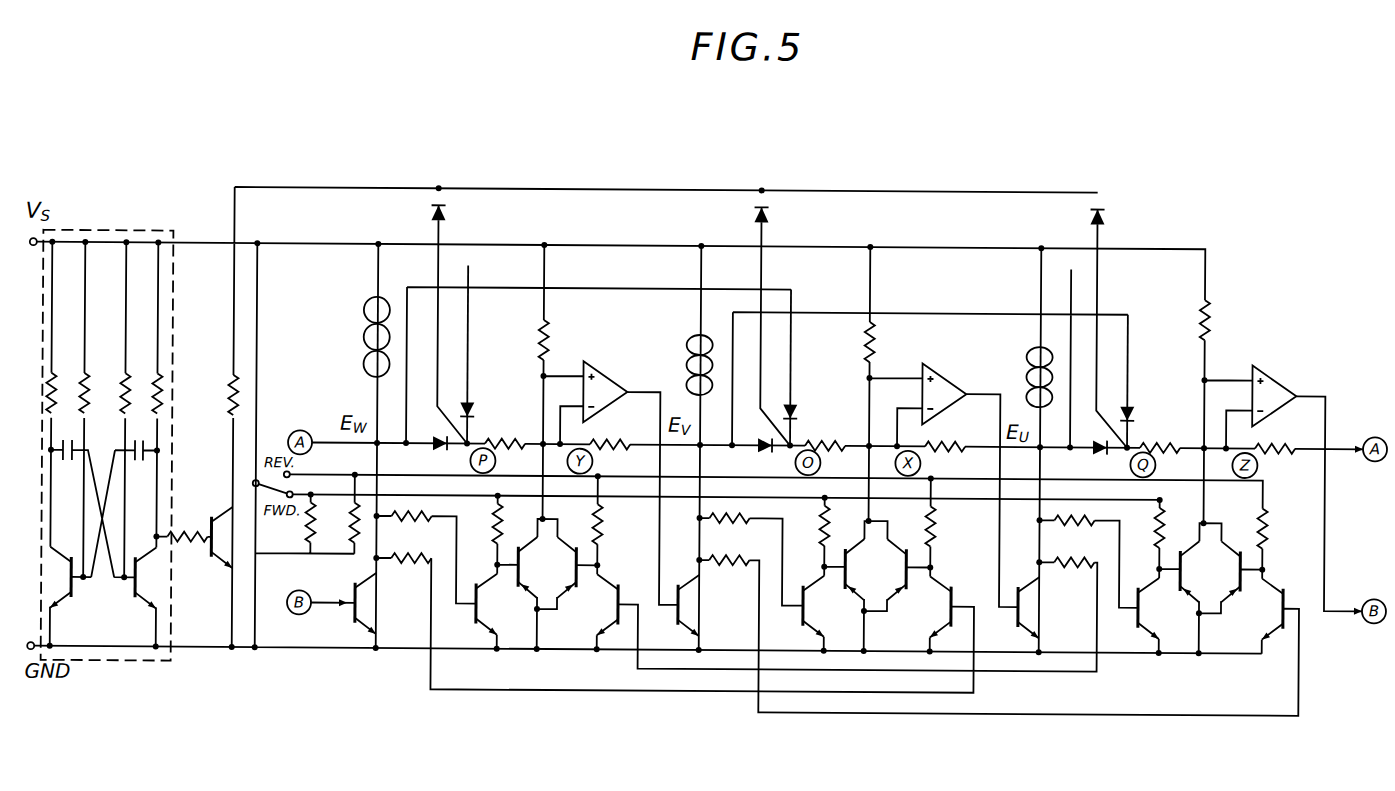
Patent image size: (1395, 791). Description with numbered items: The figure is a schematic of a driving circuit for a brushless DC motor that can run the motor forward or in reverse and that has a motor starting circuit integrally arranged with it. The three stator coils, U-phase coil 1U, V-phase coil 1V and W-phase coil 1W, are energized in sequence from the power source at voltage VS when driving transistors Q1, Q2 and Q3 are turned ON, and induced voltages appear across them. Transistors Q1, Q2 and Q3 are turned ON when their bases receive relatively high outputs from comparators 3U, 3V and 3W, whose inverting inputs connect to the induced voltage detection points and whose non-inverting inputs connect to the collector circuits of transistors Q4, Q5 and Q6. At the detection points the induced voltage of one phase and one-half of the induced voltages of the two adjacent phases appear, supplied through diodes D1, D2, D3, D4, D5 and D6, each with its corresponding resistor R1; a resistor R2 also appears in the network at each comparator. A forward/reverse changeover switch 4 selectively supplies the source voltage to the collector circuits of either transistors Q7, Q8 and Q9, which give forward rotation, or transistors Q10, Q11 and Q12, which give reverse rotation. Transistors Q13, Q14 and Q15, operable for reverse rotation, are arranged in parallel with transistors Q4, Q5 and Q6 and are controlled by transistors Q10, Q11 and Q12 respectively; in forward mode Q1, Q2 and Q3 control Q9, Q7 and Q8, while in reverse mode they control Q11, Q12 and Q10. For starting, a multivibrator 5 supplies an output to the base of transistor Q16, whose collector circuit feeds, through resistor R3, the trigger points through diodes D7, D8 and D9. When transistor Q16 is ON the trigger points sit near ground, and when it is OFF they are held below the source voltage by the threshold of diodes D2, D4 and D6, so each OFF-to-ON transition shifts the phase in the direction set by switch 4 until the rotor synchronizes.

The multivibrator 5 is at (133, 233).
The forward/reverse changeover switch 4 is at (268, 492).
The resistor R3 is at (229, 398).
The resistor R1 is at (833, 435).
The resistor R2 is at (942, 435).
The transistor Q16 is at (220, 556).
The transistor Q3 is at (350, 616).
The transistor Q8 is at (484, 627).
The transistor Q5 is at (525, 592).
The transistor Q14 is at (573, 596).
The transistor Q11 is at (637, 578).
The transistor Q2 is at (681, 627).
The transistor Q7 is at (806, 616).
The transistor Q4 is at (852, 592).
The transistor Q13 is at (901, 596).
The transistor Q10 is at (970, 578).
The transistor Q1 is at (1020, 627).
The transistor Q9 is at (1142, 627).
The transistor Q6 is at (1188, 594).
The transistor Q15 is at (1232, 546).
The transistor Q12 is at (1287, 592).
The diode D1 is at (798, 410).
The diode D2 is at (754, 431).
The diode D3 is at (476, 410).
The diode D4 is at (428, 429).
The diode D5 is at (1137, 411).
The diode D6 is at (1091, 436).
The diode D7 is at (429, 215).
The diode D8 is at (752, 215).
The diode D9 is at (1088, 215).
The W-phase coil 1W is at (364, 340).
The V-phase coil 1V is at (688, 341).
The U-phase coil 1U is at (1030, 353).
The comparator 3W is at (1279, 380).
The comparator 3V is at (611, 380).
The comparator 3U is at (952, 378).